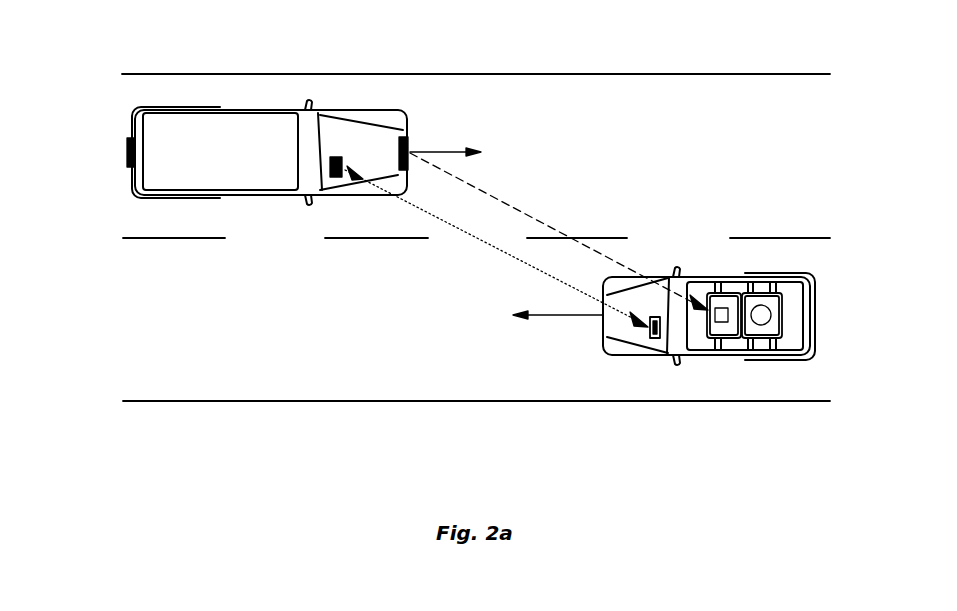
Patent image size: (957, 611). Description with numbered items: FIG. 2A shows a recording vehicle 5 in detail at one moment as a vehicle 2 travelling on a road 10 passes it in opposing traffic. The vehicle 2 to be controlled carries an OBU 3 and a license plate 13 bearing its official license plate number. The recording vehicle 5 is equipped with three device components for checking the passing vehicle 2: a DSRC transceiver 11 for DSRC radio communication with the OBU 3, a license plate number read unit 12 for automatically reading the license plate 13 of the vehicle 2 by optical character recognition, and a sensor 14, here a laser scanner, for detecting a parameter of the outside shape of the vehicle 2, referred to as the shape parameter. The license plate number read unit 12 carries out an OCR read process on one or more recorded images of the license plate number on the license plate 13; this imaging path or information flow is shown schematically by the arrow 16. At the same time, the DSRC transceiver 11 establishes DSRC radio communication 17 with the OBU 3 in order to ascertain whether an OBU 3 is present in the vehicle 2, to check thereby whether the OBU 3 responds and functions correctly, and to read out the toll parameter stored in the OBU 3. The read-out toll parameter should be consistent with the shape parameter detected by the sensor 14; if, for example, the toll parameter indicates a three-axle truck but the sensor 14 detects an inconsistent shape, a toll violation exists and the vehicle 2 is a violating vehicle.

The vehicle 2 is at (247, 112).
The OBU 3 is at (338, 158).
The recording vehicle 5 is at (786, 357).
The road 10 is at (183, 402).
The DSRC transceiver 11 is at (656, 339).
The license plate number read unit 12 is at (718, 325).
The license plate 13 is at (125, 141).
The sensor 14 is at (760, 324).
The arrow 16 is at (507, 208).
The DSRC radio communication 17 is at (492, 245).